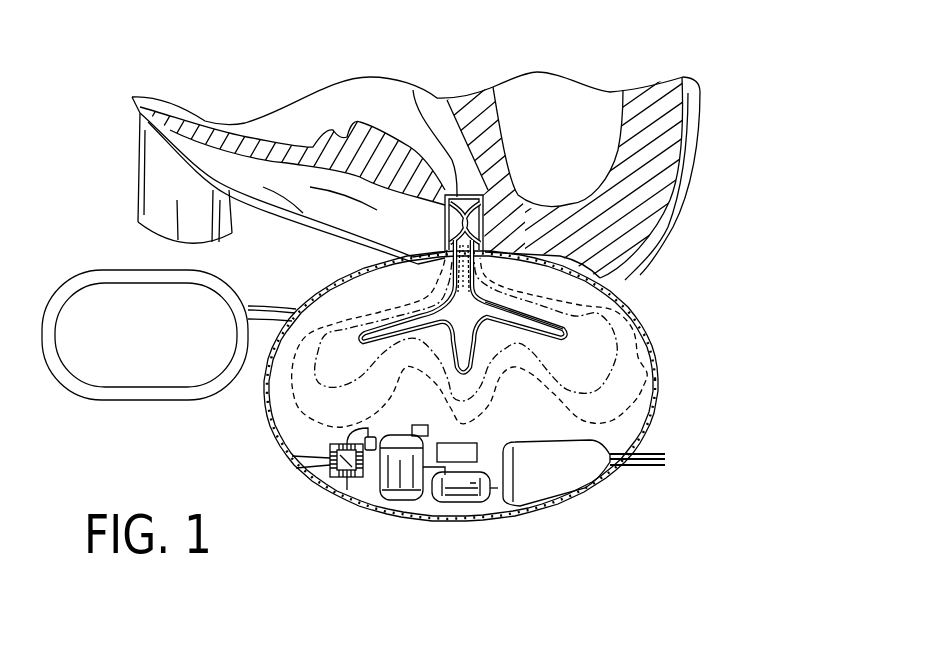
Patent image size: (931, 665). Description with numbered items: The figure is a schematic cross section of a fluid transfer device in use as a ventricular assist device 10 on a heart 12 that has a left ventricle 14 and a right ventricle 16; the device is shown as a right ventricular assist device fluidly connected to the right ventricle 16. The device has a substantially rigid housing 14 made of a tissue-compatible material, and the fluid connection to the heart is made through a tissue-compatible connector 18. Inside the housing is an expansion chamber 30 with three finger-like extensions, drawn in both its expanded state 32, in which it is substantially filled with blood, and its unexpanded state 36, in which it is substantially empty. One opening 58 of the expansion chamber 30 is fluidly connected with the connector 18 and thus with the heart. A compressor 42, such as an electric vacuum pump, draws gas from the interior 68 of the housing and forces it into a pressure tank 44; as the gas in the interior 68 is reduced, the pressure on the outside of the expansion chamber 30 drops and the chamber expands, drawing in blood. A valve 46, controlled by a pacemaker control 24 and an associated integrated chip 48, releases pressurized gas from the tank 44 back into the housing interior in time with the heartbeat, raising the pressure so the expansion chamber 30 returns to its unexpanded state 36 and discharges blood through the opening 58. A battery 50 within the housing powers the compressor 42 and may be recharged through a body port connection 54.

The ventricular assist device 10 is at (667, 324).
The heart 12 is at (716, 157).
The housing 14 is at (537, 135).
The right ventricle 16 is at (339, 116).
The connector 18 is at (490, 222).
The pacemaker control 24 is at (166, 347).
The expansion chamber 30 is at (448, 312).
The expanded state 32 is at (645, 372).
The unexpanded state 36 is at (533, 320).
The compressor 42 is at (473, 497).
The pressure tank 44 is at (400, 497).
The valve 46 is at (275, 421).
The integrated chip 48 is at (330, 456).
The battery 50 is at (587, 447).
The body port connection 54 is at (647, 470).
The opening 58 is at (413, 90).
The interior 68 is at (507, 420).